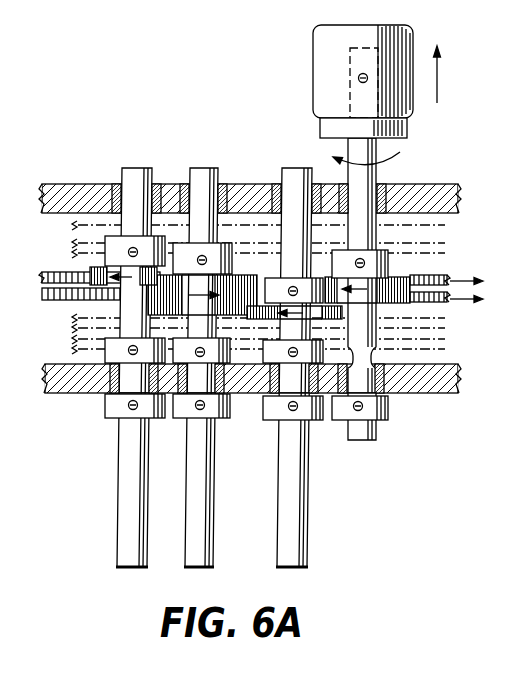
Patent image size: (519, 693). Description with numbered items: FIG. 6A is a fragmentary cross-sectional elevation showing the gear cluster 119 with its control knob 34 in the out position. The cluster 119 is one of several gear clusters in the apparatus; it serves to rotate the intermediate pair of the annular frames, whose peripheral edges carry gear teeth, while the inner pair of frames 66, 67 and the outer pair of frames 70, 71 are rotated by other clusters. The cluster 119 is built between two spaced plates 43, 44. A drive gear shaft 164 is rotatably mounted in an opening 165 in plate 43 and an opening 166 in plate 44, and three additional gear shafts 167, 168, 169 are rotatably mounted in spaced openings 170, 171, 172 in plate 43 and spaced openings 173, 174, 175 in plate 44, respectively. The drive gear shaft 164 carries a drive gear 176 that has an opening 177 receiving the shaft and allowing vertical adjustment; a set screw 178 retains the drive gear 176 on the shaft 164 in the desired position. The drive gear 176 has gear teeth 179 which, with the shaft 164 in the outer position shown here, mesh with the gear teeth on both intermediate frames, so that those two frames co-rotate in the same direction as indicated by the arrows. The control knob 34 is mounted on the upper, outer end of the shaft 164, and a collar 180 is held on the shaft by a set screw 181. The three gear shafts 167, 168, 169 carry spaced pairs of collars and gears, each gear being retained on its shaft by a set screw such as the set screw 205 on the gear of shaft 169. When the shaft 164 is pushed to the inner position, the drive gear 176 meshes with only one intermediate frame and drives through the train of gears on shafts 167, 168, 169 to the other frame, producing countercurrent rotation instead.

The control knob 34 is at (313, 88).
The plate 43 is at (443, 190).
The plate 44 is at (417, 396).
The annular frame 66 is at (440, 358).
The annular frame 67 is at (417, 339).
The annular frame 70 is at (427, 253).
The annular frame 71 is at (424, 233).
The gear cluster 119 is at (162, 110).
The drive gear shaft 164 is at (370, 153).
The opening 165 is at (384, 187).
The opening 166 is at (389, 398).
The gear shaft 167 is at (309, 530).
The gear shaft 168 is at (215, 519).
The gear shaft 169 is at (149, 508).
The opening 170 is at (279, 198).
The opening 171 is at (181, 196).
The opening 172 is at (114, 196).
The opening 173 is at (316, 421).
The opening 174 is at (213, 395).
The opening 175 is at (103, 394).
The drive gear 176 is at (378, 266).
The opening 177 is at (378, 228).
The set screw 178 is at (420, 319).
The gear teeth 179 is at (410, 306).
The collar 180 is at (391, 421).
The set screw 181 is at (360, 441).
The set screw 205 is at (84, 255).